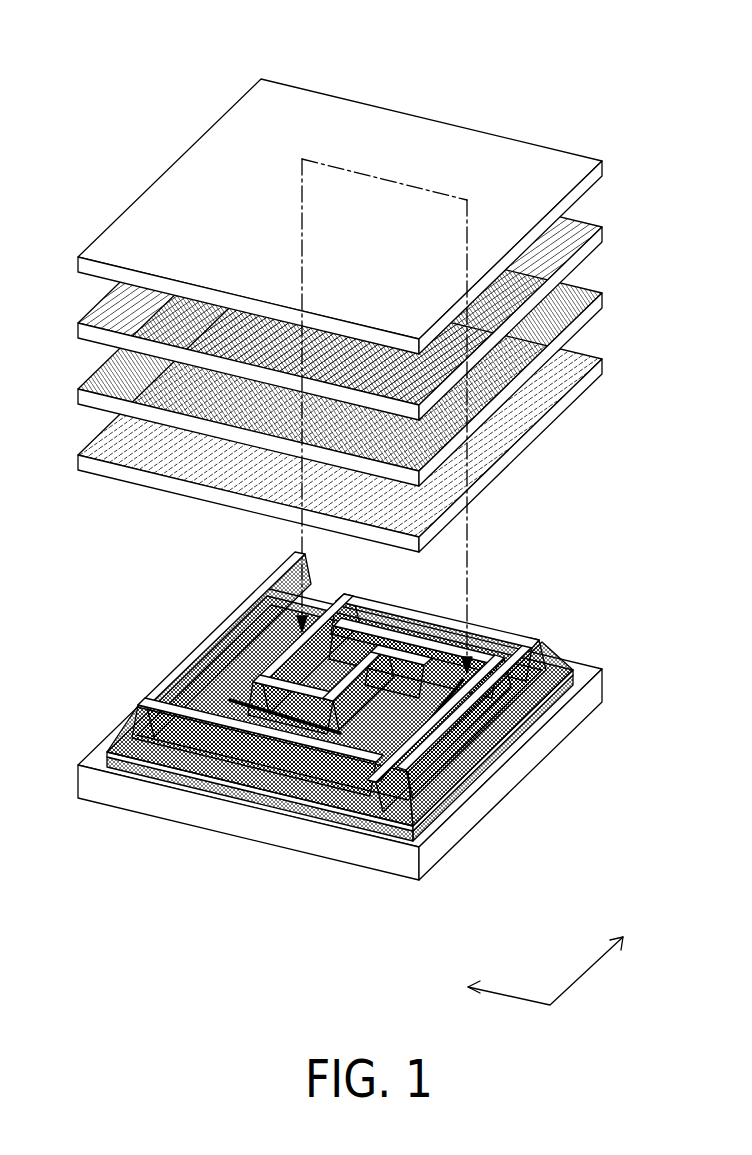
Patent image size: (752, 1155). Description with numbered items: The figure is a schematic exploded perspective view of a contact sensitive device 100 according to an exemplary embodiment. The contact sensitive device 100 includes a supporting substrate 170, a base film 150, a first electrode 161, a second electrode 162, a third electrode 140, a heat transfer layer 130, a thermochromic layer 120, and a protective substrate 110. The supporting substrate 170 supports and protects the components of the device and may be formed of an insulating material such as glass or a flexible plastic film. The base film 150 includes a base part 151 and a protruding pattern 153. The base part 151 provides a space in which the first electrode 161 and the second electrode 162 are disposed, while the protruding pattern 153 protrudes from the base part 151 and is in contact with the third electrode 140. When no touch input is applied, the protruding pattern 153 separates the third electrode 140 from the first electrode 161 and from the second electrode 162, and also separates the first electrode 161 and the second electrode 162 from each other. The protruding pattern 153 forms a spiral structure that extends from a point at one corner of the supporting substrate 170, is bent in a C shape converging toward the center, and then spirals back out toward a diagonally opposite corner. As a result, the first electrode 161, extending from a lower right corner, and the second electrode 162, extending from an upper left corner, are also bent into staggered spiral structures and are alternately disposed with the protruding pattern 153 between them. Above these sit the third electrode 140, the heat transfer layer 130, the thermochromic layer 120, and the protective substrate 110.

The contact sensitive device 100 is at (609, 46).
The protective substrate 110 is at (603, 174).
The thermochromic layer 120 is at (603, 242).
The heat transfer layer 130 is at (603, 308).
The third electrode 140 is at (603, 375).
The base film 150 is at (389, 722).
The base part 151 is at (443, 805).
The protruding pattern 153 is at (402, 755).
The first electrode 161 is at (395, 827).
The second electrode 162 is at (337, 797).
The supporting substrate 170 is at (594, 696).